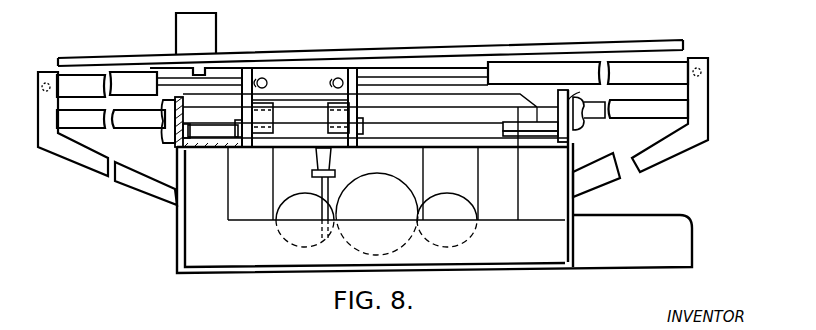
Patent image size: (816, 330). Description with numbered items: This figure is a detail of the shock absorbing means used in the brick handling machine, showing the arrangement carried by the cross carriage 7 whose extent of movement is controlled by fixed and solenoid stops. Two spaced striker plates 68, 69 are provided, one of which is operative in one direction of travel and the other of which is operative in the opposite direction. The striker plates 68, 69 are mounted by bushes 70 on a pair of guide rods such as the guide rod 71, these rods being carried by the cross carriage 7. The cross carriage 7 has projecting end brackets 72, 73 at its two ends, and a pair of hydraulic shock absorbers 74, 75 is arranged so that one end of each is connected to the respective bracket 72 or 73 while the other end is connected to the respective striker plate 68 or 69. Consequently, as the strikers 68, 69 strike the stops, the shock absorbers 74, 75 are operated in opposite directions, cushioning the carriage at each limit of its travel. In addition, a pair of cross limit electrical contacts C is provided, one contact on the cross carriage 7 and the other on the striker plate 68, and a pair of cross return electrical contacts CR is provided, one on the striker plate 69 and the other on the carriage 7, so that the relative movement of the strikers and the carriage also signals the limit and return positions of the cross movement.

The cross carriage 7 is at (175, 143).
The striker plate 68 is at (245, 72).
The striker plate 69 is at (352, 72).
The bushes 70 is at (328, 117).
The guide rod 71 is at (472, 118).
The end bracket 72 is at (72, 167).
The end bracket 73 is at (633, 163).
The hydraulic shock absorber 74 is at (132, 78).
The hydraulic shock absorber 75 is at (522, 72).
The cross limit electrical contacts C is at (222, 150).
The cross return electrical contacts CR is at (503, 122).